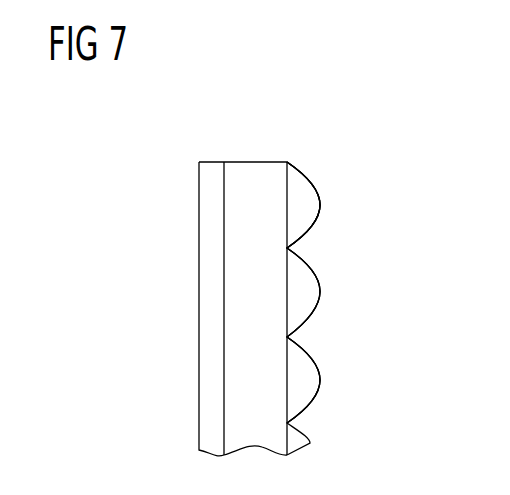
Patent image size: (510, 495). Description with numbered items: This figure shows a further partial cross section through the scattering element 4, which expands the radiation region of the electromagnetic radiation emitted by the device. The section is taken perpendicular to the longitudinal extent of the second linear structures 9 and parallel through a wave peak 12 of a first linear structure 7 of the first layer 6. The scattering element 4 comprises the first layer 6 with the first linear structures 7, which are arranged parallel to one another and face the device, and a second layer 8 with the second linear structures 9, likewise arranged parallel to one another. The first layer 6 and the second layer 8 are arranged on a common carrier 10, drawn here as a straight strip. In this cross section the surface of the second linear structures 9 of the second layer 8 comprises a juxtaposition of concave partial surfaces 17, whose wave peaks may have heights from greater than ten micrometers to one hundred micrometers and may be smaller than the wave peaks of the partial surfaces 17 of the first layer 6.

The scattering element 4 is at (298, 126).
The first layer 6 is at (173, 182).
The first linear structures 7 is at (209, 170).
The second layer 8 is at (340, 193).
The second linear structures 9 is at (307, 212).
The common carrier 10 is at (251, 172).
The wave peak 12 is at (320, 382).
The concave partial surfaces 17 is at (326, 177).